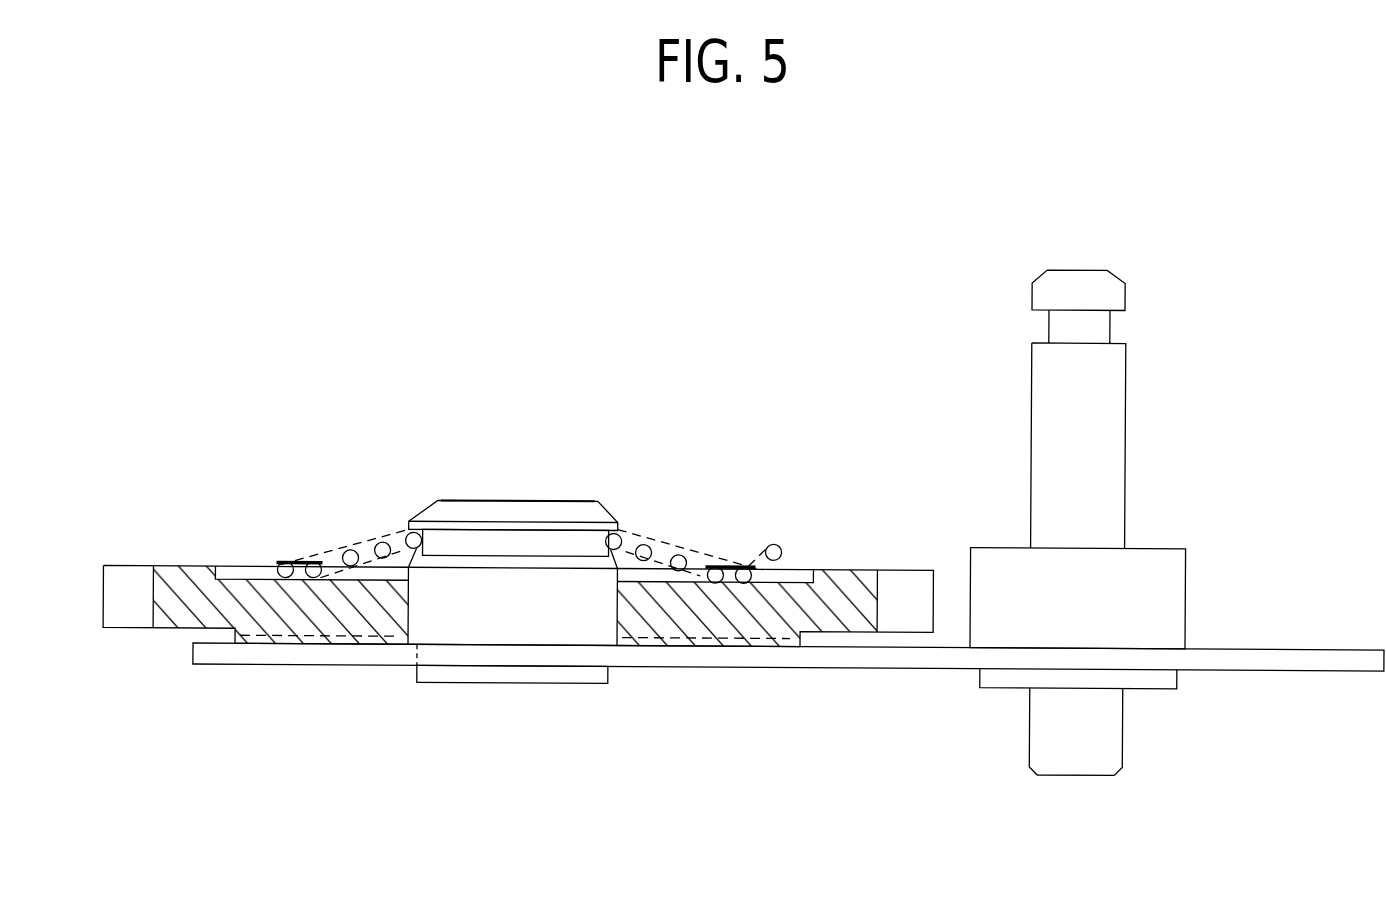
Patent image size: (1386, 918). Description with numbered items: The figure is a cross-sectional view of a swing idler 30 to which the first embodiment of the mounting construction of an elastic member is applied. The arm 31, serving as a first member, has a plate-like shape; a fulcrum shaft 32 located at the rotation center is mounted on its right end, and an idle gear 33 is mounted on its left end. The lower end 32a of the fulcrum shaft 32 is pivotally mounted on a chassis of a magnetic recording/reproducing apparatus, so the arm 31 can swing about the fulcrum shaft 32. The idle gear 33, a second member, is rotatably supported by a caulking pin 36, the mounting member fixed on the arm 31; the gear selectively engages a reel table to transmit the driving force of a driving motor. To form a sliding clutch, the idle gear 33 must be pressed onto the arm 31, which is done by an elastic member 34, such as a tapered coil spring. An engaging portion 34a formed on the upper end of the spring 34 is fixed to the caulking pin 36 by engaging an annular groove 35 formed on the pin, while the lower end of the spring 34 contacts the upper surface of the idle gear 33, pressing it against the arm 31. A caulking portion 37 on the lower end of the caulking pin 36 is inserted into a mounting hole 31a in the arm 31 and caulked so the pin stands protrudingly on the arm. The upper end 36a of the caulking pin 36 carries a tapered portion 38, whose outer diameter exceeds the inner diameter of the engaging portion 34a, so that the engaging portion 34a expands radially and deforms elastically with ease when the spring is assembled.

The swing idler 30 is at (668, 277).
The arm 31 is at (735, 657).
The mounting hole 31a is at (418, 650).
The fulcrum shaft 32 is at (1130, 443).
The lower end of the fulcrum shaft 32a is at (1077, 757).
The idle gear 33 is at (848, 560).
The elastic member 34 is at (652, 545).
The engaging portion 34a is at (402, 534).
The annular groove 35 is at (590, 538).
The caulking pin 36 is at (557, 496).
The upper end of the caulking pin 36a is at (507, 510).
The caulking portion 37 is at (510, 675).
The tapered portion 38 is at (410, 521).